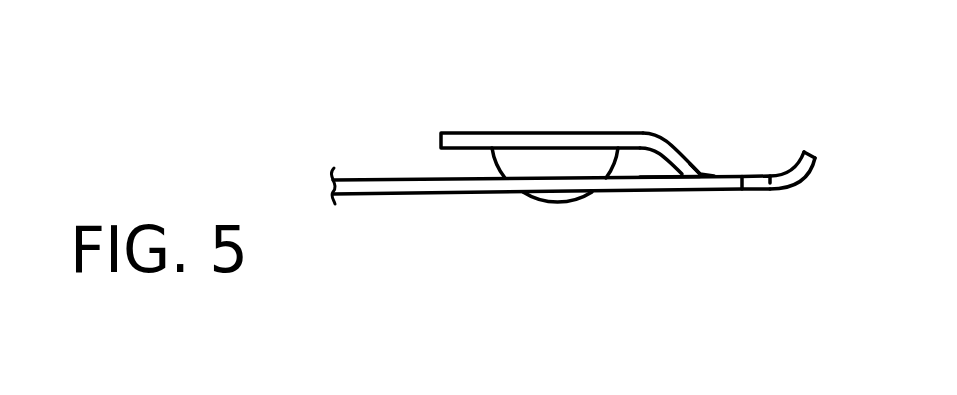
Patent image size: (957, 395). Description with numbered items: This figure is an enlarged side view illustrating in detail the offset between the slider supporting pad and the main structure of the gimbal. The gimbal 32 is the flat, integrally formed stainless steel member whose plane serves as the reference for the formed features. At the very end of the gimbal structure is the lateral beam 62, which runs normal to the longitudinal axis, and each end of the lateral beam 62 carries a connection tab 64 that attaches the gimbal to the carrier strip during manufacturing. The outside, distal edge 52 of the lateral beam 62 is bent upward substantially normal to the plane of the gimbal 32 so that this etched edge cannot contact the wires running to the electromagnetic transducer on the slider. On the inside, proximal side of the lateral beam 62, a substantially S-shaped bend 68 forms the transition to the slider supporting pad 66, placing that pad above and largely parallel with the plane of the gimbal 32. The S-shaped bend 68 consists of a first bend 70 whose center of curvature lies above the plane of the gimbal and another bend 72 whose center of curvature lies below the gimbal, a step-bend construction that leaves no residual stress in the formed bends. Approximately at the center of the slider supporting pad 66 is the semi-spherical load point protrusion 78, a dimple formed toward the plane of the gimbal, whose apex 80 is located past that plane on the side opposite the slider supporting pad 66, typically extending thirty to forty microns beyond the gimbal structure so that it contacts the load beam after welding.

The gimbal portion 32 is at (440, 215).
The outside distal edge of the lateral beam 52 is at (810, 150).
The lateral beam 62 is at (780, 170).
The connection tab 64 is at (757, 181).
The slider supporting pad 66 is at (642, 140).
The S-shaped bend 68 is at (682, 160).
The first bend 70 is at (714, 174).
The other bend 72 is at (660, 178).
The load point protrusion 78 is at (555, 166).
The apex 80 is at (555, 203).